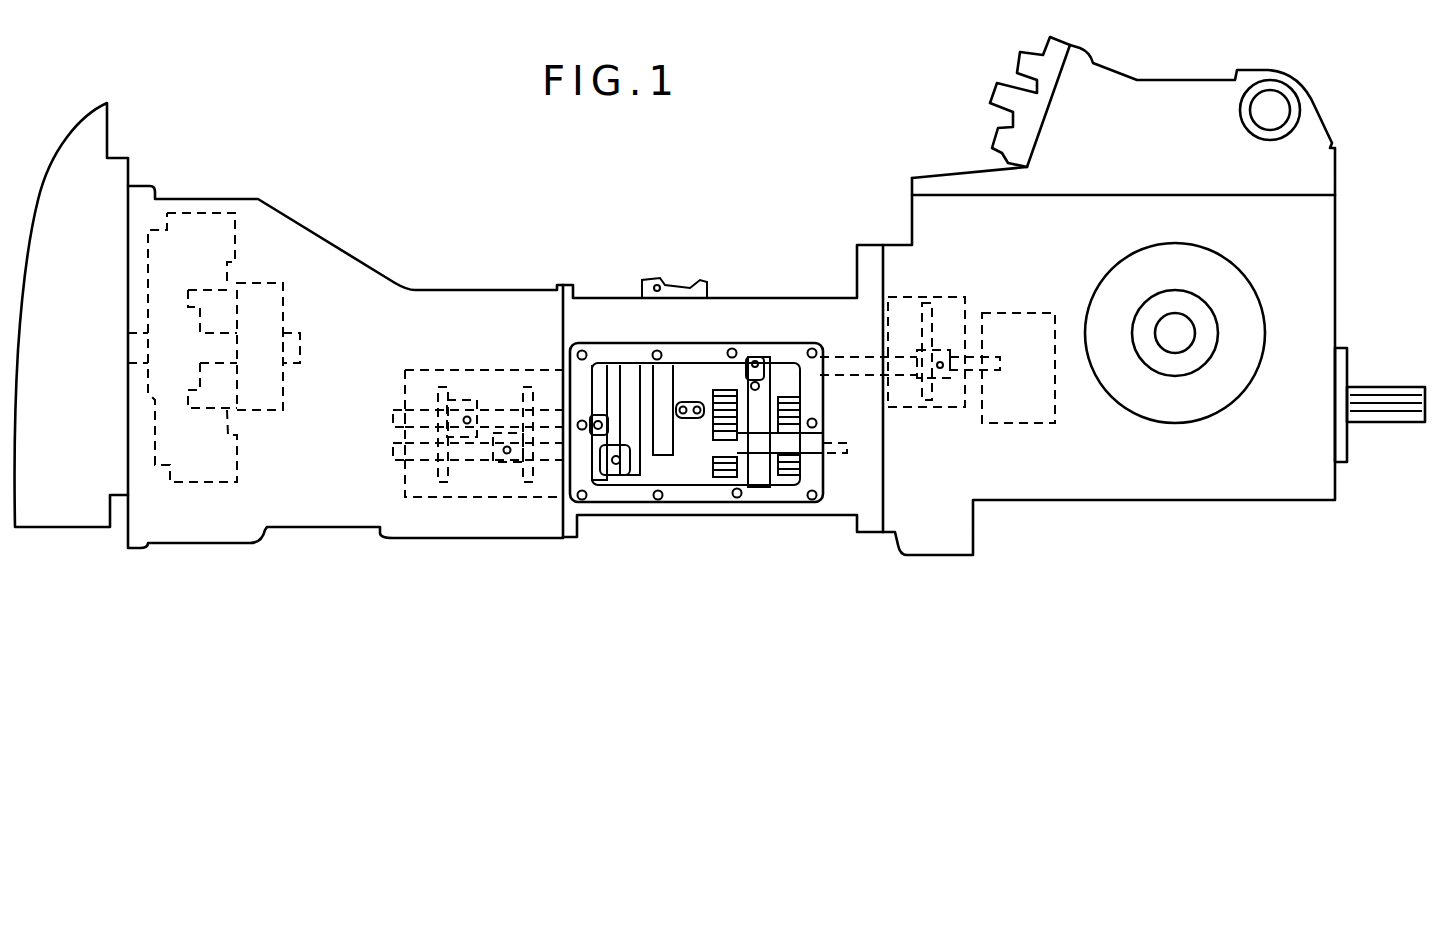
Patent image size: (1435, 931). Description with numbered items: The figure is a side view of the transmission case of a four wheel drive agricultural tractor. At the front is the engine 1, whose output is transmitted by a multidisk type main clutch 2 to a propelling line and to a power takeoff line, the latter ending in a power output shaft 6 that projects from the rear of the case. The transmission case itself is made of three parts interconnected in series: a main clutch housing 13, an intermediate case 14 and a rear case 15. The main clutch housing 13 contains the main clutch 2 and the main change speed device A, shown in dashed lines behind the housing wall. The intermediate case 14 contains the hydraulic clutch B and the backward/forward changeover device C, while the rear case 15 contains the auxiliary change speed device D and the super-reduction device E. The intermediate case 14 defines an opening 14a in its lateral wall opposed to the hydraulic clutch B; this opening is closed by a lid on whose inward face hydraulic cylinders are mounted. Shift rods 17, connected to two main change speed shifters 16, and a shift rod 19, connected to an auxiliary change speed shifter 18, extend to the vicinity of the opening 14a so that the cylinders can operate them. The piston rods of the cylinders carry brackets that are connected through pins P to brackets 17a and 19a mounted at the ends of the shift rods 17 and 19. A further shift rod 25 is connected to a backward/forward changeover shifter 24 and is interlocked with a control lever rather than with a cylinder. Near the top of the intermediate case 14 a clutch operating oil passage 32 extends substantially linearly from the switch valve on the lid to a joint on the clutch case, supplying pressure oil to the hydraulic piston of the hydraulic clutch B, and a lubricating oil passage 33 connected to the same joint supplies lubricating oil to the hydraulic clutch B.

The engine 1 is at (103, 135).
The main clutch 2 is at (270, 410).
The power output shaft 6 is at (1388, 387).
The main clutch housing 13 is at (328, 242).
The intermediate case 14 is at (822, 298).
The opening 14a is at (563, 367).
The rear case 15 is at (1163, 488).
The main change speed shifters 16 is at (442, 470).
The shift rods 17 is at (485, 410).
The brackets 17a is at (620, 435).
The auxiliary change speed shifter 18 is at (932, 390).
The shift rod 19 is at (852, 357).
The bracket 19a is at (754, 360).
The backward/forward changeover shifter 24 is at (763, 477).
The shift rod 25 is at (847, 448).
The clutch operating oil passage 32 is at (677, 407).
The lubricating oil passage 33 is at (693, 407).
The main change speed device A is at (405, 370).
The hydraulic clutch B is at (630, 367).
The backward/forward changeover device C is at (727, 477).
The auxiliary change speed device D is at (945, 297).
The super-reduction device E is at (1025, 313).
The pins P is at (777, 387).